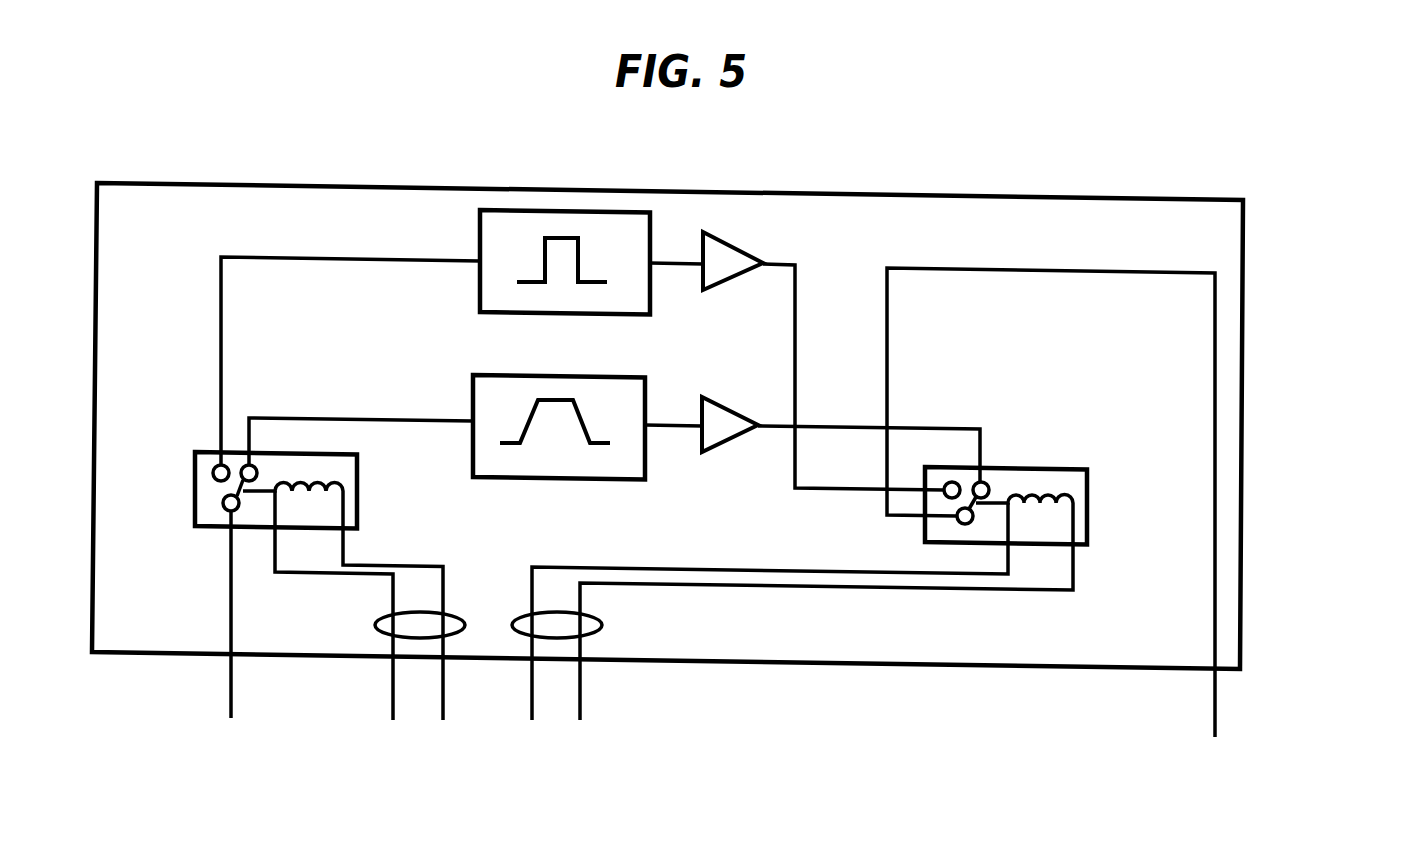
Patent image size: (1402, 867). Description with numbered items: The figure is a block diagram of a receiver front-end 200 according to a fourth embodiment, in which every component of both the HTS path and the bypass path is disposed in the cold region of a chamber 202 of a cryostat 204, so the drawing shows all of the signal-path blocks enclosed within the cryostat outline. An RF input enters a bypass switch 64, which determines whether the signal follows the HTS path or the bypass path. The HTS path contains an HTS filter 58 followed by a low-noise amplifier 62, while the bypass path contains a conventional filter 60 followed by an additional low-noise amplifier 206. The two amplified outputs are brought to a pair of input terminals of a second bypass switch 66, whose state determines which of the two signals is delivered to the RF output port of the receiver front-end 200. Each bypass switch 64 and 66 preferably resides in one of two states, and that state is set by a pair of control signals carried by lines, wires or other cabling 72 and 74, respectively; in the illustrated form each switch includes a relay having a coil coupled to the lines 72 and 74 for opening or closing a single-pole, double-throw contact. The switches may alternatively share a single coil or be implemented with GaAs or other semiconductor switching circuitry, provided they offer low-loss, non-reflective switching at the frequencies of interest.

The HTS filter 58 is at (577, 210).
The conventional filter 60 is at (645, 395).
The low-noise amplifier 62 is at (737, 245).
The bypass switch 64 is at (195, 475).
The bypass switch 66 is at (1087, 486).
The lines 72 is at (376, 630).
The lines 74 is at (600, 630).
The receiver front-end 200 is at (1264, 343).
The chamber 202 is at (1224, 540).
The cryostat 204 is at (1240, 630).
The low-noise amplifier 206 is at (745, 432).